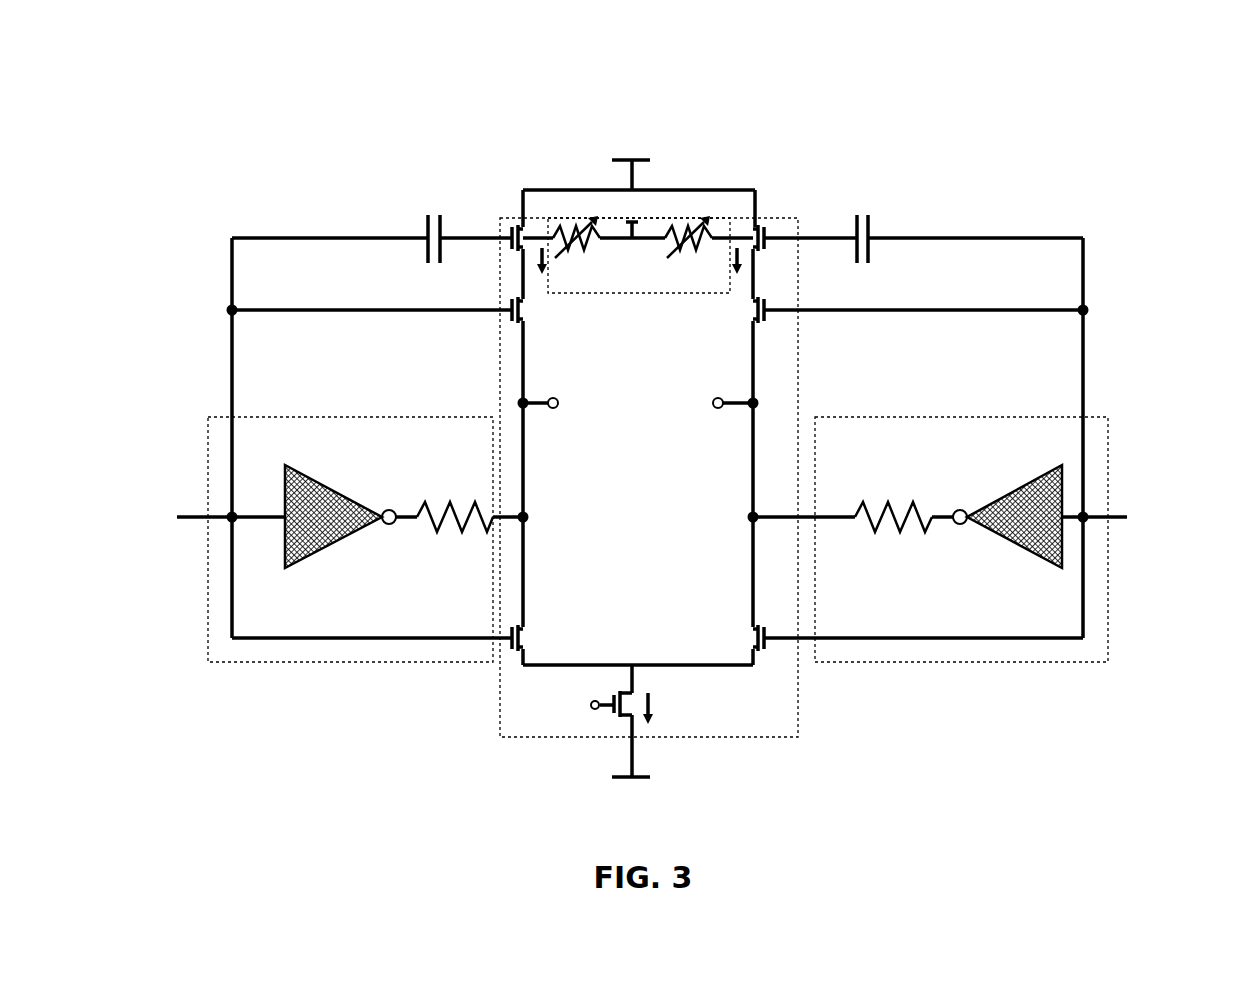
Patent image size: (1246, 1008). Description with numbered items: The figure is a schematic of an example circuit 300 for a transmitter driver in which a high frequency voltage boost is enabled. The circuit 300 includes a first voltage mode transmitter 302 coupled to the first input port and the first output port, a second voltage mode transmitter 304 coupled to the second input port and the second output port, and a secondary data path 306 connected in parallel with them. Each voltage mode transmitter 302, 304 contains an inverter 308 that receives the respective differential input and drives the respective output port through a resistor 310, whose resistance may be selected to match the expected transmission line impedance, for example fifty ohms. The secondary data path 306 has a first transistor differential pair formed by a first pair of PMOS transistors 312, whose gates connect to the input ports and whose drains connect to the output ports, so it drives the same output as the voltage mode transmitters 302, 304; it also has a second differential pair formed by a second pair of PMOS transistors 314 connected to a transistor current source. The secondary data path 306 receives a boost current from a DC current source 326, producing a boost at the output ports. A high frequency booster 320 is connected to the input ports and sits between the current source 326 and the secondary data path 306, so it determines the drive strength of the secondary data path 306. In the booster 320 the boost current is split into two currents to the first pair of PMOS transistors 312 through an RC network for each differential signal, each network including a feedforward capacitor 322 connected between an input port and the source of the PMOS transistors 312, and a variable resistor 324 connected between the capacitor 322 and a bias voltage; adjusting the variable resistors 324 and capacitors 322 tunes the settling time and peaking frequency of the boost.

The circuit 300 is at (348, 110).
The first voltage mode transmitter 302 is at (350, 662).
The second voltage mode transmitter 304 is at (963, 662).
The secondary data path 306 is at (788, 738).
The inverter 308 is at (325, 485).
The resistor 310 is at (438, 542).
The first pair of PMOS transistors 312 is at (528, 318).
The second pair of PMOS transistors 314 is at (528, 632).
The high frequency booster 320 is at (927, 158).
The feedforward capacitor 322 is at (422, 225).
The variable resistor 324 is at (552, 230).
The DC current source 326 is at (631, 159).